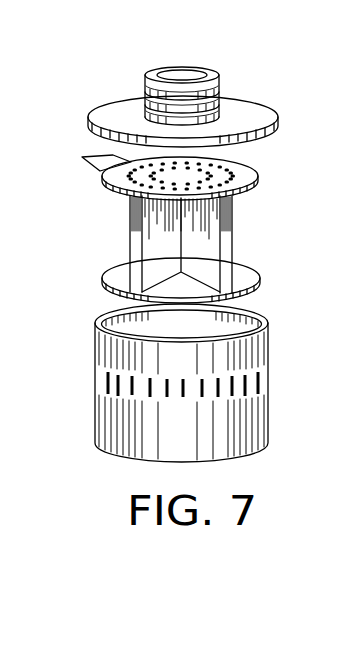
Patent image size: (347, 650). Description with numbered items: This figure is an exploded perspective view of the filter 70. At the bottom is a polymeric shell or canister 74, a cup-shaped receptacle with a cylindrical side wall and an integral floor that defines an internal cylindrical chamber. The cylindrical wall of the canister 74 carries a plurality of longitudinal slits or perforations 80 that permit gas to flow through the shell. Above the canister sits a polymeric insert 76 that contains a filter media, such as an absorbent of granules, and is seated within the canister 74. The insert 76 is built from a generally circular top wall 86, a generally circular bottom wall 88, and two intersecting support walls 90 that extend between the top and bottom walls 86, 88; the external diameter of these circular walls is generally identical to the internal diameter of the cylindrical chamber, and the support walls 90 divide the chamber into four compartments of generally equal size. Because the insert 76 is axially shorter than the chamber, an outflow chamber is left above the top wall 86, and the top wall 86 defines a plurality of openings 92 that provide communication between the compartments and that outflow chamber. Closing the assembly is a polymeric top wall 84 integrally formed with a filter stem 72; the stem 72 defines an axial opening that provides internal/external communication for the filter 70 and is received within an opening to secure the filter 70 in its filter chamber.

The filter 70 is at (244, 64).
The filter stem 72 is at (150, 93).
The canister 74 is at (275, 411).
The insert 76 is at (268, 169).
The perforations 80 is at (130, 395).
The top wall 84 is at (182, 71).
The top wall 86 is at (243, 195).
The bottom wall 88 is at (247, 277).
The support walls 90 is at (130, 240).
The openings 92 is at (123, 178).